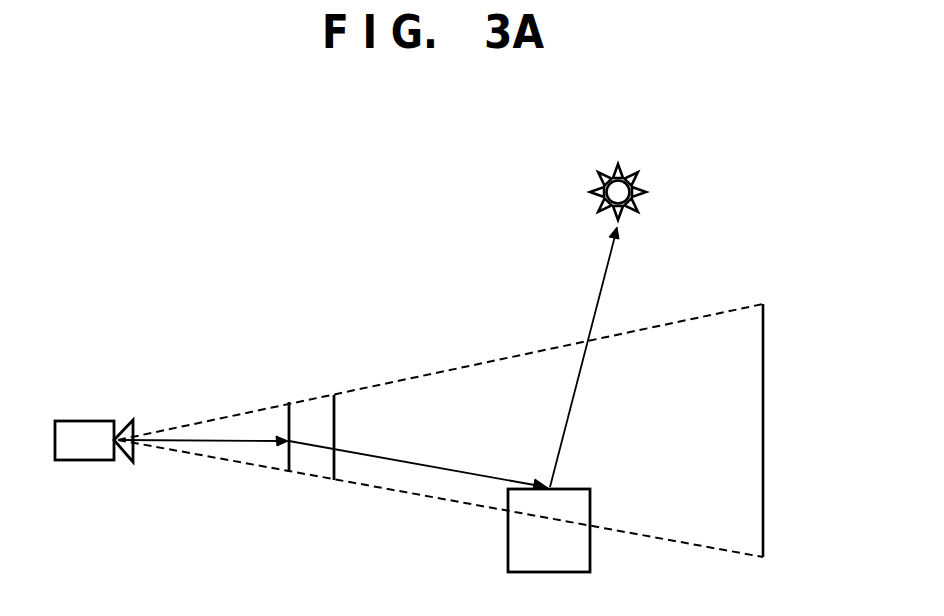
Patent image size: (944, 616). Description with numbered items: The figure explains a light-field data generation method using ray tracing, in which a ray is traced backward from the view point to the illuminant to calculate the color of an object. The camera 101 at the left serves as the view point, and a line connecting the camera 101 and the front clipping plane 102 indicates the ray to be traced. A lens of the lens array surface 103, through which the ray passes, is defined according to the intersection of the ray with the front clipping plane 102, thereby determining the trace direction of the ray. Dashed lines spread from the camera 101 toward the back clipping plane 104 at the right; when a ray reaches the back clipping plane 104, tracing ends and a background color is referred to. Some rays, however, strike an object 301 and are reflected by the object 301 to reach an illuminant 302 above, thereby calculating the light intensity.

The camera 101 is at (88, 421).
The front clipping plane 102 is at (288, 400).
The lens array surface 103 is at (335, 425).
The back clipping plane 104 is at (765, 318).
The object 301 is at (591, 503).
The illuminant 302 is at (636, 174).